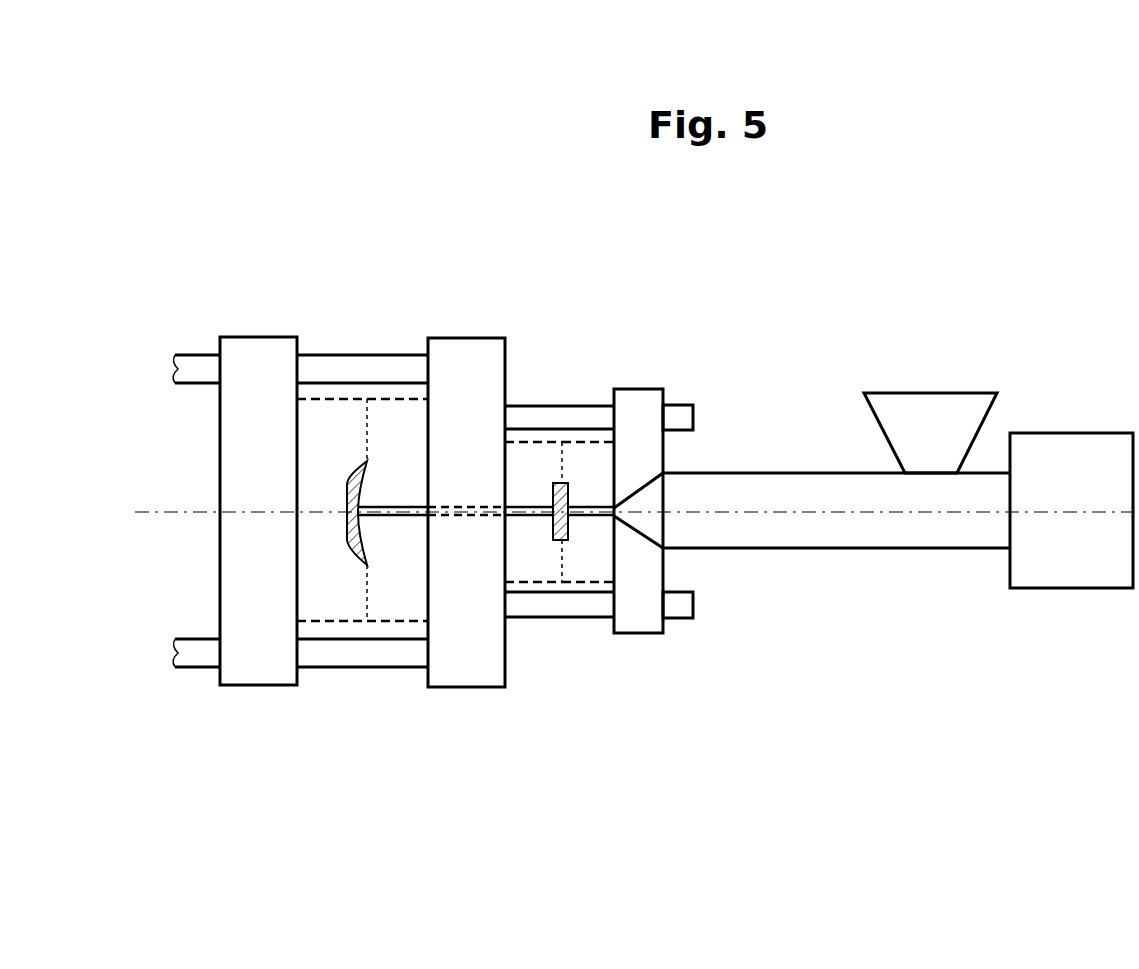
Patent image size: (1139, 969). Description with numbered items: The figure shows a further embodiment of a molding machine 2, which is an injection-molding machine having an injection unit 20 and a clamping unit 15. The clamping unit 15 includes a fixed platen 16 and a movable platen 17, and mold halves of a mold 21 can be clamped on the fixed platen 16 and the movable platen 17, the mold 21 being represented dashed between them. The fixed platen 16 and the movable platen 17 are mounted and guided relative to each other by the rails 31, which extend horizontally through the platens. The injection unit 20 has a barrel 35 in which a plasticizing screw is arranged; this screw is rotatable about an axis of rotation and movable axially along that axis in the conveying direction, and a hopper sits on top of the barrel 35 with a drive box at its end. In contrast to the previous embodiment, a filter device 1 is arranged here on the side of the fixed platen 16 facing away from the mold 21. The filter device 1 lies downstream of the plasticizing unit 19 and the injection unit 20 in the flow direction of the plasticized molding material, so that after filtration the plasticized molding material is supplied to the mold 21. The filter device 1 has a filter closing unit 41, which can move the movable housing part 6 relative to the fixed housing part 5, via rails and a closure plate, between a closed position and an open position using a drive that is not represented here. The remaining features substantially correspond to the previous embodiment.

The filter device 1 is at (559, 612).
The molding machine 2 is at (198, 185).
The fixed housing part 5 is at (525, 562).
The movable housing part 6 is at (589, 565).
The clamping unit 15 is at (354, 461).
The fixed platen 16 is at (458, 360).
The movable platen 17 is at (262, 378).
The plasticizing unit 19 is at (873, 420).
The injection unit 20 is at (873, 420).
The mold 21 is at (362, 290).
The rails 31 is at (187, 378).
The barrel 35 is at (827, 483).
The filter closing unit 41 is at (588, 378).